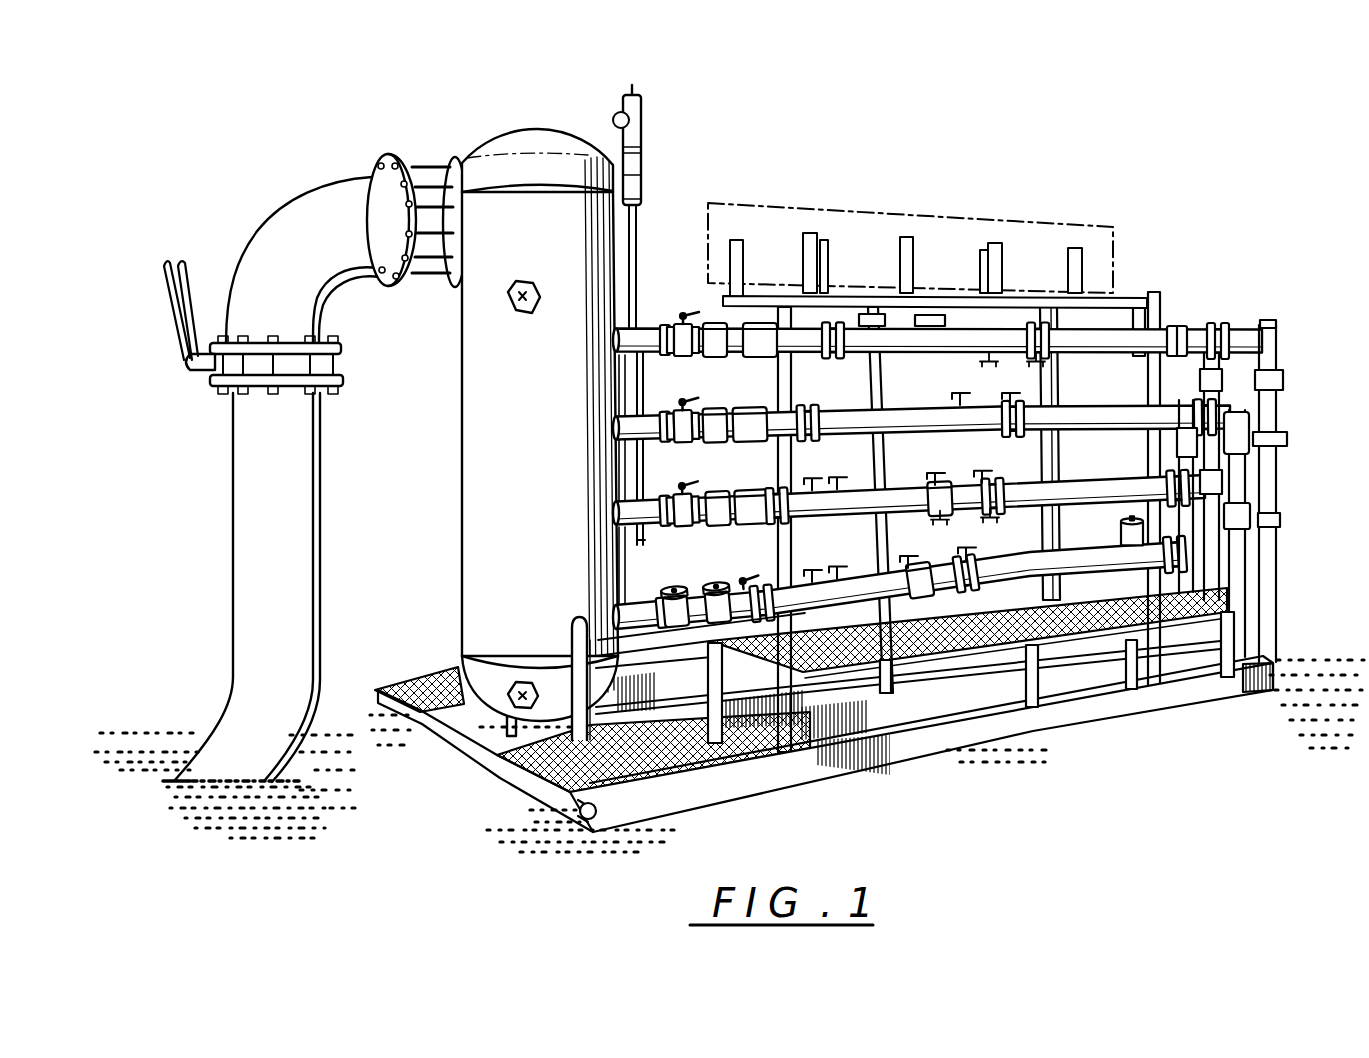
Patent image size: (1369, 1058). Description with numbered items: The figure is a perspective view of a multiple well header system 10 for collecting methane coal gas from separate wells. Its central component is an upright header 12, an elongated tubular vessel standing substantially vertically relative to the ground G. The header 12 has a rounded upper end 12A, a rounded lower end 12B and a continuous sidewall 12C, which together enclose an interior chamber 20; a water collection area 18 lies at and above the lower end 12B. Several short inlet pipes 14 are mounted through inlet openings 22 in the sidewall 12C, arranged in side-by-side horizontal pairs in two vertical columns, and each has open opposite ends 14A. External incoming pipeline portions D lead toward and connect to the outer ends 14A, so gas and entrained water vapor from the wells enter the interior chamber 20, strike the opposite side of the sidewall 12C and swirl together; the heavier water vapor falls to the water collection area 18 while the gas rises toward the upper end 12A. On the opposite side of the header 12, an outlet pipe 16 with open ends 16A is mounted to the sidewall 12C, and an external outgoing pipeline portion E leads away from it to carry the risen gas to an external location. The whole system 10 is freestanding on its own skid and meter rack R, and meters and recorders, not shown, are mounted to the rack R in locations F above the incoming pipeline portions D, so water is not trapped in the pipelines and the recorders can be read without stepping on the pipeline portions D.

The multiple well header system 10 is at (458, 104).
The upright header 12 is at (494, 402).
The upper end 12A is at (575, 130).
The lower end 12B is at (488, 682).
The continuous sidewall 12C is at (460, 454).
The inlet pipes 14 is at (625, 358).
The open opposite ends 14A is at (656, 402).
The outlet pipe 16 is at (437, 192).
The open opposite ends 16A is at (378, 170).
The water collection area 18 is at (514, 700).
The interior chamber 20 is at (506, 296).
The inlet openings 22 is at (614, 340).
The external outgoing pipeline portion E is at (260, 243).
The locations F is at (876, 212).
The external incoming pipeline portions D is at (1240, 334).
The ground G is at (401, 851).
The skid and meter rack R is at (1094, 750).